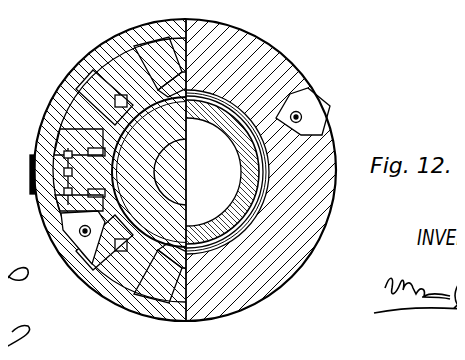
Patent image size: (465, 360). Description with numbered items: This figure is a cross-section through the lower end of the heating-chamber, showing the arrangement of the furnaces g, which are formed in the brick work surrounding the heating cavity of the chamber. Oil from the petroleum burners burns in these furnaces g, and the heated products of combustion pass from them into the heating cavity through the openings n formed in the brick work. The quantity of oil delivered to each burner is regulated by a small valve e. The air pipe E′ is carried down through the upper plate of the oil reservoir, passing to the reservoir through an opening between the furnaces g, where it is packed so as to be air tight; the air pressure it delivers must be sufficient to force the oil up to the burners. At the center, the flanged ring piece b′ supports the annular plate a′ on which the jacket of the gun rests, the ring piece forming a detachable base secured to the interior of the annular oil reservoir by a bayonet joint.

The furnace g is at (92, 178).
The opening n is at (119, 174).
The valve e is at (57, 176).
The annular plate a′ is at (119, 193).
The flanged ring piece b′ is at (187, 172).
The air pipe E′ is at (293, 107).